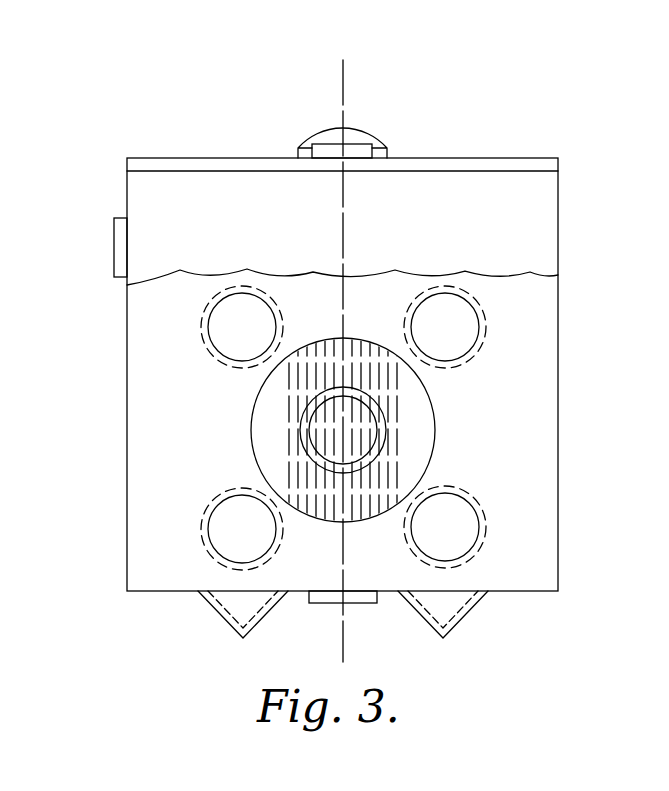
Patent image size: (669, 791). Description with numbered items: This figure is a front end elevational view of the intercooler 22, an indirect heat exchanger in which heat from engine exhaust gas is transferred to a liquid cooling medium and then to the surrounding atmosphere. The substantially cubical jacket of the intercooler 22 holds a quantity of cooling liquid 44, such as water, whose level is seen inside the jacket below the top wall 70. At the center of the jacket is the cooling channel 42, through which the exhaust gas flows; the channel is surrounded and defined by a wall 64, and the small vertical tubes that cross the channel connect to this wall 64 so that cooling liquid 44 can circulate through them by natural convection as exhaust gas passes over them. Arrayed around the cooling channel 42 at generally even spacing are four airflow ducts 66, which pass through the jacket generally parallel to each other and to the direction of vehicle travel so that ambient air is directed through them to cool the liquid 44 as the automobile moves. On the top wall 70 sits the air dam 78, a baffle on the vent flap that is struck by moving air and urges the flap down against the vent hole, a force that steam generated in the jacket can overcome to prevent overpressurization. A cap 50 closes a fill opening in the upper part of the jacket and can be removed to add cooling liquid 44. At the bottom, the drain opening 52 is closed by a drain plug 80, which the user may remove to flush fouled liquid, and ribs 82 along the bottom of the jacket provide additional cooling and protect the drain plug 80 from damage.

The intercooler 22 is at (560, 198).
The cooling channel 42 is at (415, 422).
The cooling liquid 44 is at (548, 290).
The cap 50 is at (121, 218).
The drain opening 52 is at (346, 591).
The wall 64 is at (437, 443).
The airflow ducts 66 is at (206, 335).
The top wall 70 is at (458, 158).
The air dam 78 is at (358, 132).
The drain plug 80 is at (358, 604).
The ribs 82 is at (222, 614).